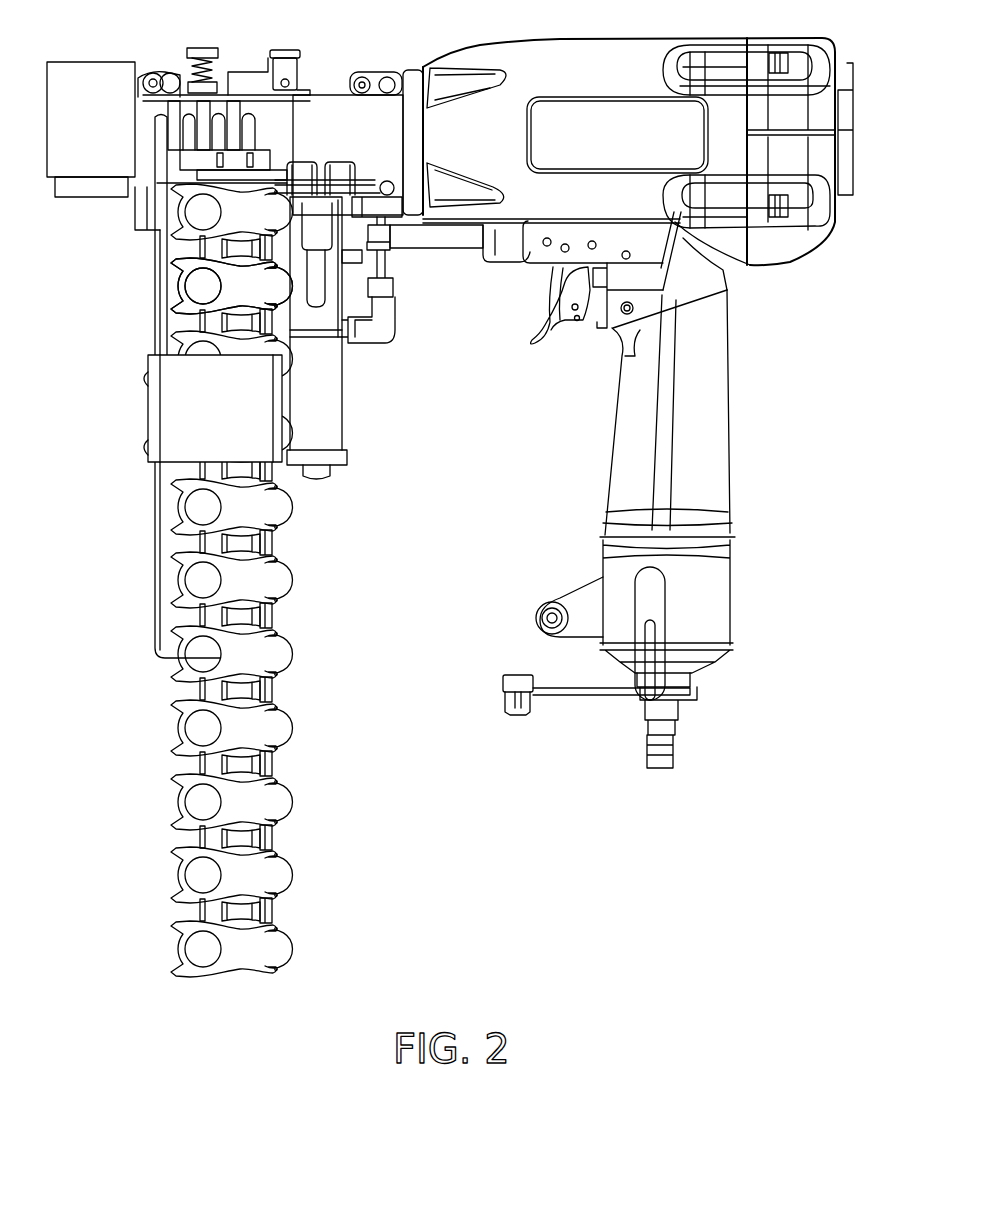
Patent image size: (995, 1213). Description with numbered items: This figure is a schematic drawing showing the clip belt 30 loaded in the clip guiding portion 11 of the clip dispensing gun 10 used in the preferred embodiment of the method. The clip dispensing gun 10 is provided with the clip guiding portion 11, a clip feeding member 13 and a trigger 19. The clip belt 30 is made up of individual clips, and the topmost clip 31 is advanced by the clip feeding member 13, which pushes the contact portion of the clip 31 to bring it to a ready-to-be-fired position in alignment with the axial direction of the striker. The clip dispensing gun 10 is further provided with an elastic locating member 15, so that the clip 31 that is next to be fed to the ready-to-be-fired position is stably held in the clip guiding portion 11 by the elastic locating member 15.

The clip dispensing gun 10 is at (713, 702).
The clip guiding portion 11 is at (157, 573).
The clip feeding member 13 is at (325, 387).
The elastic locating member 15 is at (267, 210).
The trigger 19 is at (557, 343).
The clip belt 30 is at (145, 748).
The clip 31 is at (172, 310).